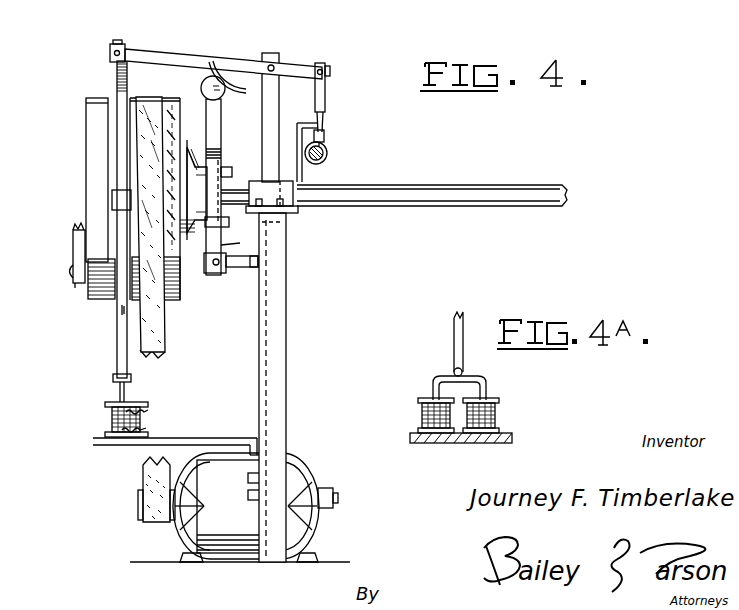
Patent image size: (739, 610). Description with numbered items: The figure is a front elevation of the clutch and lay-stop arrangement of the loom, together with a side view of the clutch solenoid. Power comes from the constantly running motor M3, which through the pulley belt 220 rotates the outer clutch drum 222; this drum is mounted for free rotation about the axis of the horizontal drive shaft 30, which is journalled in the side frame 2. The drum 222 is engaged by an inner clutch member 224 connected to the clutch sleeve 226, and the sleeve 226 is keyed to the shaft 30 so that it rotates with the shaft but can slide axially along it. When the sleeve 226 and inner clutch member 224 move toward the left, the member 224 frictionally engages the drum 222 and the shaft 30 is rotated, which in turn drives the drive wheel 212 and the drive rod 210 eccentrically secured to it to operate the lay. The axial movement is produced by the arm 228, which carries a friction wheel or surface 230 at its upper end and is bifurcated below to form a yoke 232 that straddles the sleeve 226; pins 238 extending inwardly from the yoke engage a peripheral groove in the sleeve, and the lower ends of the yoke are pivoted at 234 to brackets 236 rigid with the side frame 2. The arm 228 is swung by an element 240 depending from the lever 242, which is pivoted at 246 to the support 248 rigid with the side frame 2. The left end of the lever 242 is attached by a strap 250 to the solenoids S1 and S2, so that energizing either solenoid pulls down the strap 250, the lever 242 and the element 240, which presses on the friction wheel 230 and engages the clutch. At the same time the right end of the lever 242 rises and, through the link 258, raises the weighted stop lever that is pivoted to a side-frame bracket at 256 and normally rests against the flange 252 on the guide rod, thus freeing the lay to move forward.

In FIG. 4, the side frame 2 is at (286, 366).
In FIG. 4, the horizontal drive shaft 30 is at (448, 193).
In FIG. 4, the drive rod 210 is at (80, 248).
In FIG. 4, the drive wheel 212 is at (93, 164).
In FIG. 4, the pulley belt 220 is at (163, 356).
In FIG. 4, the outer clutch drum 222 is at (170, 110).
In FIG. 4, the inner clutch member 224 is at (184, 166).
In FIG. 4, the clutch sleeve 226 is at (200, 233).
In FIG. 4, the arm 228 is at (224, 148).
In FIG. 4, the friction wheel or surface 230 is at (211, 76).
In FIG. 4, the yoke 232 is at (218, 247).
In FIG. 4, the pivot 234 is at (225, 272).
In FIG. 4, the bracket 236 is at (240, 258).
In FIG. 4, the pin 238 is at (219, 197).
In FIG. 4, the element 240 is at (227, 82).
In FIG. 4, the lever 242 is at (303, 70).
In FIG. 4, the pivot 246 is at (275, 65).
In FIG. 4, the support 248 is at (268, 110).
In FIG. 4, the strap 250 is at (117, 334).
In FIG. 4A, the strap 250 is at (456, 332).
In FIG. 4, the flange 252 is at (326, 150).
In FIG. 4, the bracket pivot 256 is at (302, 183).
In FIG. 4, the link 258 is at (320, 109).
In FIG. 4A, the solenoid S1 is at (420, 412).
In FIG. 4, the solenoid S2 is at (106, 414).
In FIG. 4A, the solenoid S2 is at (499, 412).
In FIG. 4, the motor M3 is at (306, 468).